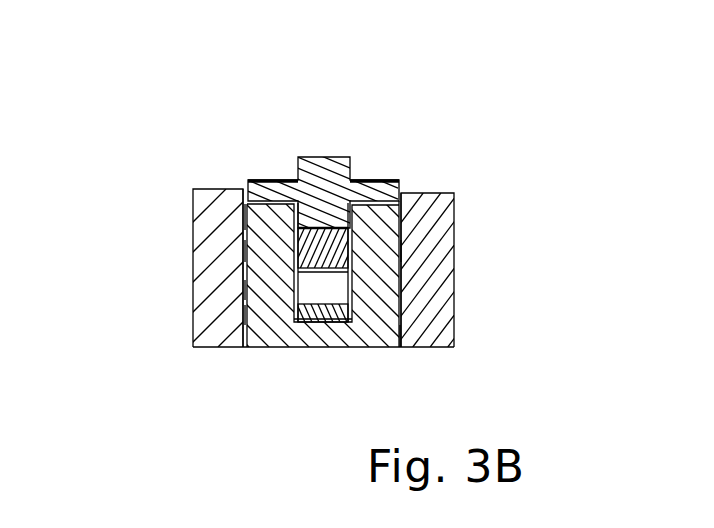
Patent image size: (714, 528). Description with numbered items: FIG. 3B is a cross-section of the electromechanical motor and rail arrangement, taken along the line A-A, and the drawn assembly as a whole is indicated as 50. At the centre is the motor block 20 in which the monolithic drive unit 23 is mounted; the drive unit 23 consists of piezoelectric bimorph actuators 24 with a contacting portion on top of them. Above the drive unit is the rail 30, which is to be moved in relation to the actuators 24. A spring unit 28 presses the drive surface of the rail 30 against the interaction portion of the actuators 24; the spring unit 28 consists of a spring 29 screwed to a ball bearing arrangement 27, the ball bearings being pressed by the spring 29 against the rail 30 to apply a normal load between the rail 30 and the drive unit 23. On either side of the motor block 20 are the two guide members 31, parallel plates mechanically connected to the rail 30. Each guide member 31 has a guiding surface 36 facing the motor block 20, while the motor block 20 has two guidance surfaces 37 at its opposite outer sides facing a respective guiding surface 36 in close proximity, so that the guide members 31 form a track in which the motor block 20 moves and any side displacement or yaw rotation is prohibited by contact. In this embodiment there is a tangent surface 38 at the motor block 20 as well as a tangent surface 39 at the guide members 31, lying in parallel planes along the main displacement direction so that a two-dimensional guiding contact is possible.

The sealing assembly 50 is at (140, 152).
The spring unit 28 is at (301, 133).
The ball bearing arrangement 27 is at (320, 172).
The spring 29 is at (383, 180).
The rail 30 is at (323, 228).
The actuators 24 is at (330, 298).
The monolithic drive unit 23 is at (338, 313).
The motor block 20 is at (287, 337).
The guide members 31 is at (210, 333).
The guiding surface 36 is at (250, 260).
The guidance surfaces 37 is at (402, 253).
The tangent surface 38 is at (248, 294).
The tangent surface 39 is at (250, 226).